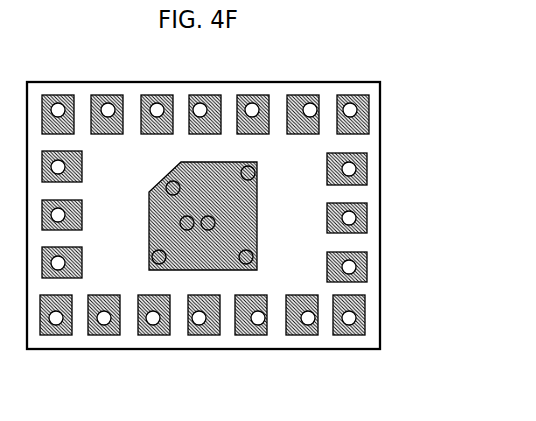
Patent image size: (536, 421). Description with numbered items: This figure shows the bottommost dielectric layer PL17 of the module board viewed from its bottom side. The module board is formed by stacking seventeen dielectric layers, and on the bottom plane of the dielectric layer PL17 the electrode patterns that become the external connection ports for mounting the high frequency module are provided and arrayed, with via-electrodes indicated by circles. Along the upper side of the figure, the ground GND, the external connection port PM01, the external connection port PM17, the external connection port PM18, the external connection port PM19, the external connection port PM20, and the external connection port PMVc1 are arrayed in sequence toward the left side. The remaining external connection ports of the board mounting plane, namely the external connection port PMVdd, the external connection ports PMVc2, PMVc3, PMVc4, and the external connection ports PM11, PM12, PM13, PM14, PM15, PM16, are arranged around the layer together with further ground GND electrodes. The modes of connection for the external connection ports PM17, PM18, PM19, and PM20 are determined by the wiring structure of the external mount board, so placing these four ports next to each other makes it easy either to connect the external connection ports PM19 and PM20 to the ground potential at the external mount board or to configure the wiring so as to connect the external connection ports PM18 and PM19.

The dielectric layer PL17 is at (380, 349).
The external connection port PMVc1 is at (58, 95).
The external connection port PMVc2 is at (82, 170).
The external connection port PMVc3 is at (82, 218).
The external connection port PMVc4 is at (82, 266).
The external connection port PMVdd is at (55, 335).
The ground GND is at (357, 95).
The external connection port PM01 is at (306, 95).
The external connection port PM11 is at (327, 172).
The external connection port PM12 is at (327, 270).
The external connection port PM13 is at (308, 335).
The external connection port PM14 is at (256, 335).
The external connection port PM15 is at (209, 335).
The external connection port PM16 is at (157, 335).
The external connection port PM17 is at (257, 95).
The external connection port PM18 is at (203, 95).
The external connection port PM19 is at (160, 95).
The external connection port PM20 is at (105, 95).